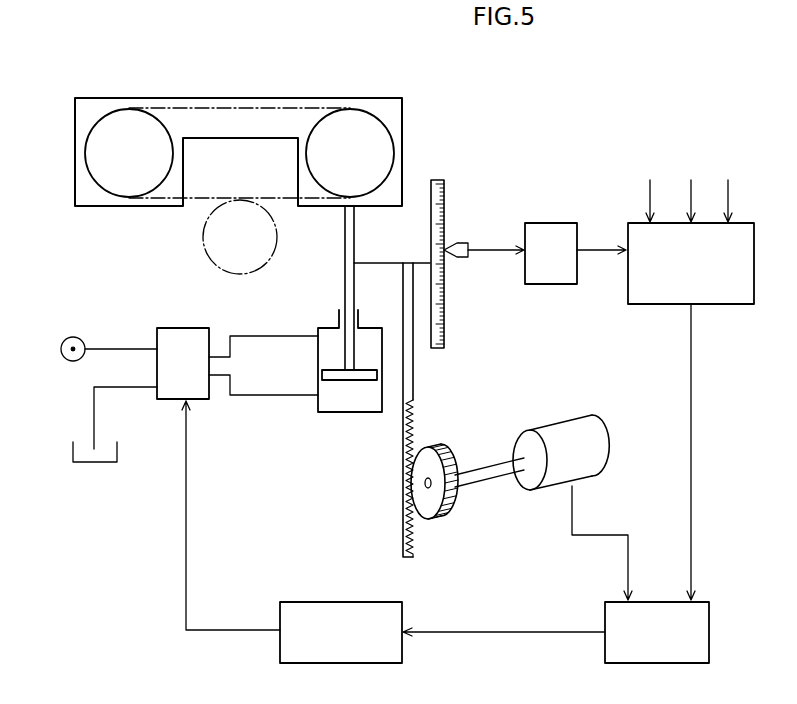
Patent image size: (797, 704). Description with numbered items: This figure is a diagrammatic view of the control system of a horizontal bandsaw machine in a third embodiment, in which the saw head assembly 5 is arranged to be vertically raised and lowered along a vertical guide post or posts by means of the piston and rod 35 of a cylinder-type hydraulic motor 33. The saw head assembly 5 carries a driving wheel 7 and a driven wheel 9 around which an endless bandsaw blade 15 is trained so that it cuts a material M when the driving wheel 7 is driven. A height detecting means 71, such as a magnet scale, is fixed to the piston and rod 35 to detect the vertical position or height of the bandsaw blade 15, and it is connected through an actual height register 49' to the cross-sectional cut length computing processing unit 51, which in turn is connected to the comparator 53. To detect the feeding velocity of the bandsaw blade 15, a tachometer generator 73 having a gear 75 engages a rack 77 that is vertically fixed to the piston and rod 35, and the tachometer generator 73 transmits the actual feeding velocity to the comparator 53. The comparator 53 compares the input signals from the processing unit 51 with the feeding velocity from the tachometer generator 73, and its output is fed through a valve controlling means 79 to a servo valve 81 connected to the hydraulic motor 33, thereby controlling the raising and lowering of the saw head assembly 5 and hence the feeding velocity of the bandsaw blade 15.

The saw head assembly 5 is at (327, 97).
The driving wheel 7 is at (393, 137).
The driven wheel 9 is at (75, 163).
The bandsaw blade 15 is at (205, 107).
The material M is at (243, 200).
The hydraulic motor 33 is at (322, 411).
The piston and rod 35 is at (347, 247).
The actual height register 49' is at (510, 253).
The cross-sectional cut length computing processing unit 51 is at (665, 380).
The comparator 53 is at (556, 632).
The height detecting means 71 is at (452, 222).
The tachometer generator 73 is at (598, 444).
The gear 75 is at (430, 507).
The rack 77 is at (409, 386).
The valve controlling means 79 is at (292, 532).
The servo valve 81 is at (189, 395).